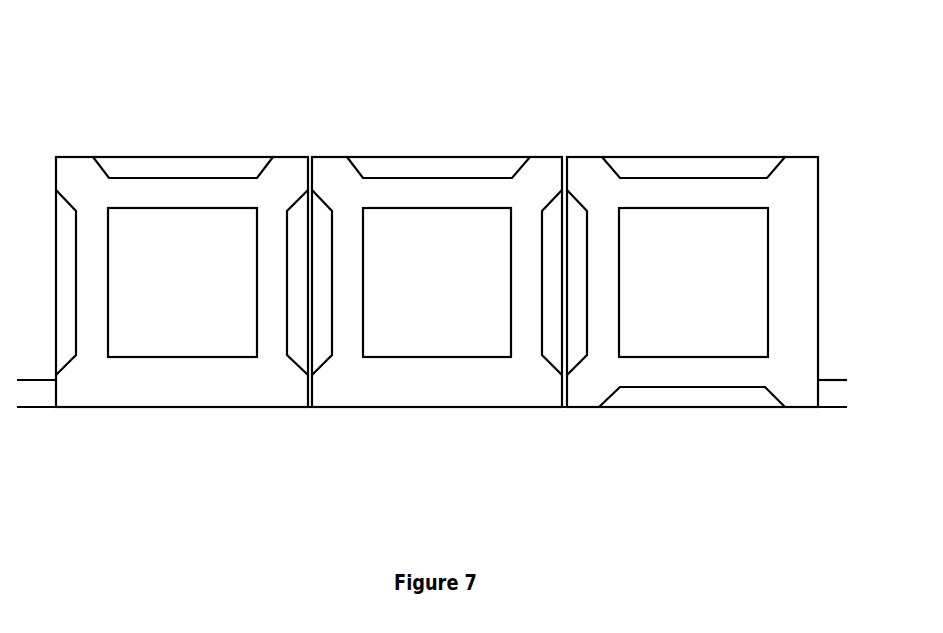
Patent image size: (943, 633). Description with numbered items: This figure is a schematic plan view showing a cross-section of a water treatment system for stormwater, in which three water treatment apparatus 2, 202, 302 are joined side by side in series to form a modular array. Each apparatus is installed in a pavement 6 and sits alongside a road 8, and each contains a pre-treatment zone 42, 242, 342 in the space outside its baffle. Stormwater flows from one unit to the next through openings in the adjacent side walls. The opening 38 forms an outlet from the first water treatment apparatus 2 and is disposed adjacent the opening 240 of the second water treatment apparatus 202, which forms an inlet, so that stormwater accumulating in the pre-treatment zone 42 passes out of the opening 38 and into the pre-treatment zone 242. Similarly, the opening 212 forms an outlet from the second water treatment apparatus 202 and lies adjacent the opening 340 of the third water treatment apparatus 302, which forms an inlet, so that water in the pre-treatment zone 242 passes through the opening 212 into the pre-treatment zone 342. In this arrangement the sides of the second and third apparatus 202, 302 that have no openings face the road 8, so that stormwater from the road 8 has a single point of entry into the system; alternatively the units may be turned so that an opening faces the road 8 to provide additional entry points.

The water treatment apparatus 2 is at (692, 258).
The second water treatment apparatus 202 is at (437, 252).
The third water treatment apparatus 302 is at (182, 258).
The pre-treatment zone 42 is at (698, 381).
The pre-treatment zone 242 is at (445, 390).
The pre-treatment zone 342 is at (205, 394).
The opening 38 is at (573, 350).
The opening 212 is at (320, 347).
The opening 240 is at (552, 352).
The opening 340 is at (297, 350).
The pavement 6 is at (35, 361).
The road 8 is at (45, 441).